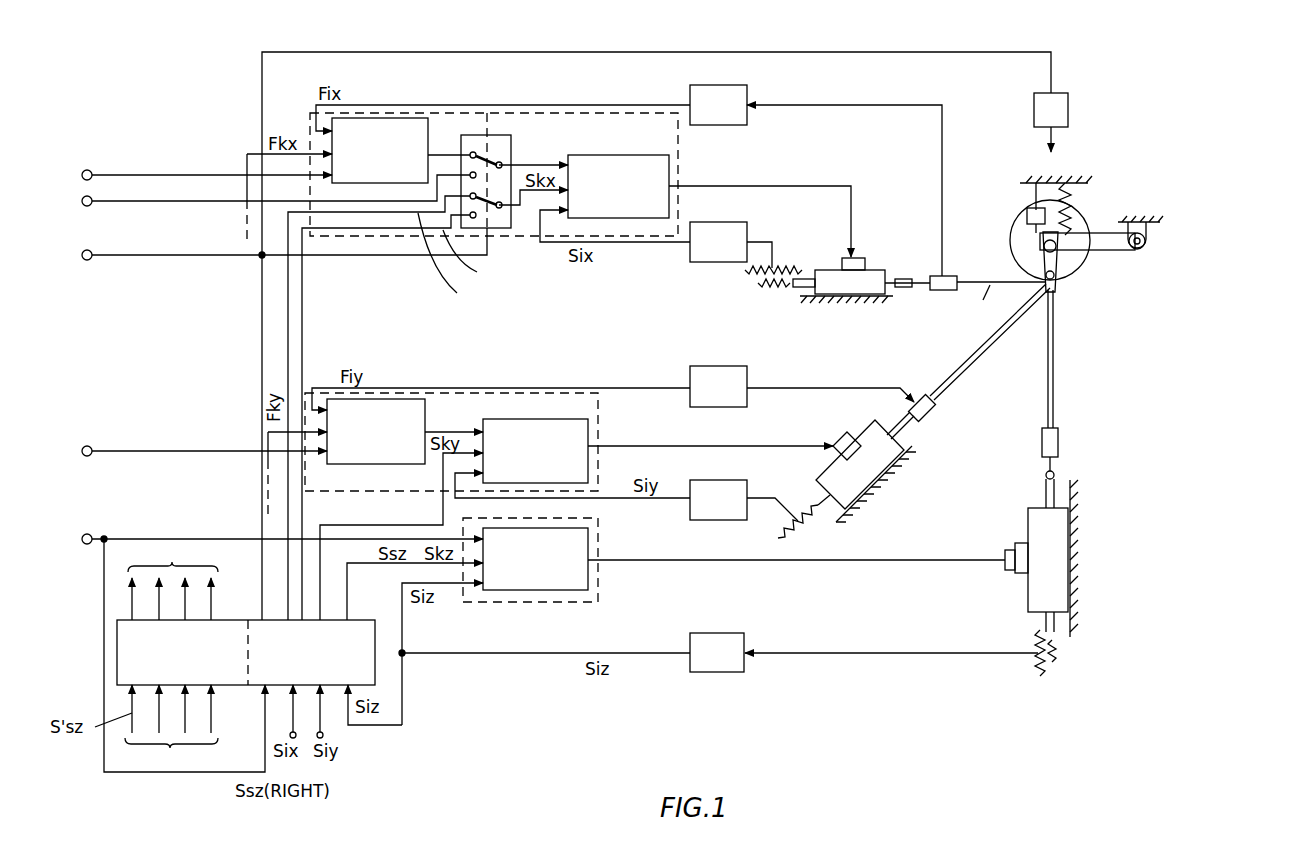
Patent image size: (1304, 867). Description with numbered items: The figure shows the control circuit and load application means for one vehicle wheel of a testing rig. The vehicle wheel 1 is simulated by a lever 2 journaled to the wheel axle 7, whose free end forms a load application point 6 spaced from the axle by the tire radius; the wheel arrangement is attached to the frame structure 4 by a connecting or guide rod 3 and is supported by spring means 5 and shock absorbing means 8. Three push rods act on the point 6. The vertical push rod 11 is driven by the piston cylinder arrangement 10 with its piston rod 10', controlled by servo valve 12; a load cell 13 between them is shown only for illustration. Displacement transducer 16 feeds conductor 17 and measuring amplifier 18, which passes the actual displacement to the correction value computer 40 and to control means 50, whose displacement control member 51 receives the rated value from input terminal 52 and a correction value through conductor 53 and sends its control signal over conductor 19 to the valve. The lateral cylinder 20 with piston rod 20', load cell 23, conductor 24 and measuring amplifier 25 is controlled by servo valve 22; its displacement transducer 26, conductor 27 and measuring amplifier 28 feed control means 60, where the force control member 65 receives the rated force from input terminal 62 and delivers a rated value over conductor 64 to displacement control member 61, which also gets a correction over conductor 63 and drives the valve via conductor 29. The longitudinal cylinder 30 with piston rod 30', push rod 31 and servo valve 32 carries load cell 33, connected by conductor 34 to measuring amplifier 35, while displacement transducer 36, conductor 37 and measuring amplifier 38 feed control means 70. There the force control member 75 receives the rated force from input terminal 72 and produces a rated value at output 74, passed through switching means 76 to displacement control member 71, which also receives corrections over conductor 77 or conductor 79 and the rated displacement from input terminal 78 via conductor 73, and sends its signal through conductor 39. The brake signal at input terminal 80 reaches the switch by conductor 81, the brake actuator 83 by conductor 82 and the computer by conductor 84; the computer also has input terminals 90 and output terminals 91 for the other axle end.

The vehicle wheel 1 is at (1082, 226).
The lever 2 is at (1068, 268).
The connecting or guide rod 3 is at (1115, 250).
The frame structure 4 is at (1060, 180).
The spring means 5 is at (1072, 196).
The load application point 6 is at (1057, 283).
The wheel axle 7 is at (1040, 247).
The shock absorbing means 8 is at (1027, 214).
The piston cylinder arrangement 10 is at (1028, 558).
The piston rod 10' is at (1077, 478).
The push rod 11 is at (1053, 388).
The servo valve 12 is at (1017, 543).
The load cell 13 is at (1062, 437).
The displacement transducer 16 is at (1033, 663).
The conductor 17 is at (942, 652).
The measuring amplifier 18 is at (692, 672).
The conductor 19 is at (927, 557).
The piston cylinder arrangement 20 is at (869, 471).
The piston rod 20' is at (883, 419).
The servo valve 22 is at (852, 433).
The load cell 23 is at (934, 414).
The conductor 24 is at (788, 388).
The measuring amplifier 25 is at (692, 367).
The displacement transducer 26 is at (802, 493).
The conductor 27 is at (767, 510).
The measuring amplifier 28 is at (692, 520).
The conductor 29 is at (738, 445).
The piston cylinder arrangement 30 is at (861, 266).
The piston rod 30' is at (847, 316).
The push rod 31 is at (1001, 308).
The servo valve 32 is at (862, 258).
The load cell 33 is at (945, 292).
The conductor 34 is at (942, 142).
The measuring amplifier 35 is at (733, 86).
The displacement transducer 36 is at (777, 277).
The conductor 37 is at (773, 263).
The measuring amplifier 38 is at (730, 265).
The conductor 39 is at (860, 160).
The correction value computer 40 is at (377, 632).
The control means 50 is at (595, 521).
The displacement control member RSz 51 is at (593, 545).
The input terminal 52 is at (136, 536).
The conductor 53 is at (348, 602).
The control means 60 is at (477, 393).
The displacement control member RSy 61 is at (582, 430).
The input terminal 62 is at (134, 448).
The conductor 63 is at (334, 508).
The conductor 64 is at (454, 415).
The force control member RFy 65 is at (415, 398).
The control means 70 is at (678, 143).
The displacement control member RSx 71 is at (660, 180).
The input terminal 72 is at (137, 172).
The conductor 73 is at (238, 203).
The output 74 is at (449, 143).
The force control member RFx 75 is at (428, 117).
The switching means 76 is at (502, 137).
The conductor 77 is at (288, 330).
The input terminal 78 is at (139, 198).
The conductor 79 is at (300, 362).
The input terminal 80 is at (141, 252).
The conductor 81 is at (372, 257).
The conductor 82 is at (343, 50).
The brake actuator 83 is at (1068, 106).
The conductor 84 is at (260, 317).
The input terminals 90 is at (171, 727).
The output terminals 91 is at (173, 581).